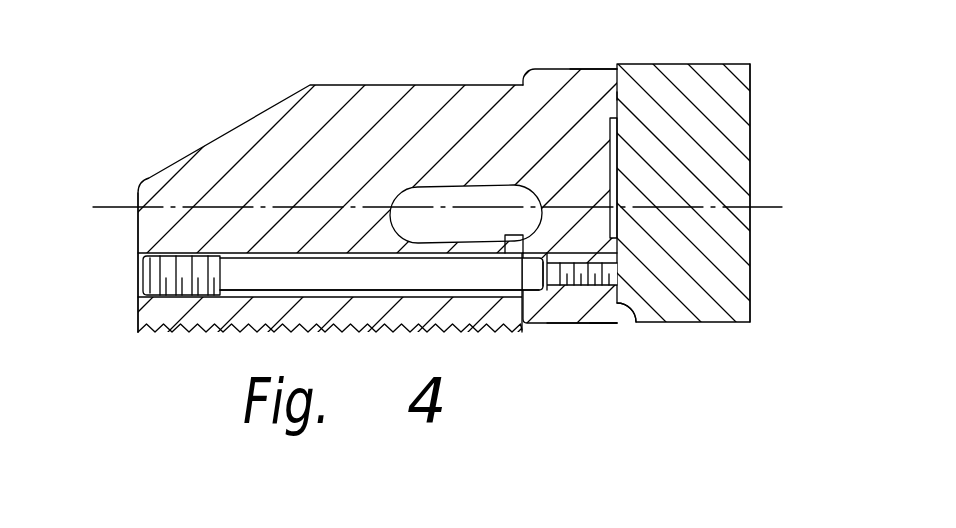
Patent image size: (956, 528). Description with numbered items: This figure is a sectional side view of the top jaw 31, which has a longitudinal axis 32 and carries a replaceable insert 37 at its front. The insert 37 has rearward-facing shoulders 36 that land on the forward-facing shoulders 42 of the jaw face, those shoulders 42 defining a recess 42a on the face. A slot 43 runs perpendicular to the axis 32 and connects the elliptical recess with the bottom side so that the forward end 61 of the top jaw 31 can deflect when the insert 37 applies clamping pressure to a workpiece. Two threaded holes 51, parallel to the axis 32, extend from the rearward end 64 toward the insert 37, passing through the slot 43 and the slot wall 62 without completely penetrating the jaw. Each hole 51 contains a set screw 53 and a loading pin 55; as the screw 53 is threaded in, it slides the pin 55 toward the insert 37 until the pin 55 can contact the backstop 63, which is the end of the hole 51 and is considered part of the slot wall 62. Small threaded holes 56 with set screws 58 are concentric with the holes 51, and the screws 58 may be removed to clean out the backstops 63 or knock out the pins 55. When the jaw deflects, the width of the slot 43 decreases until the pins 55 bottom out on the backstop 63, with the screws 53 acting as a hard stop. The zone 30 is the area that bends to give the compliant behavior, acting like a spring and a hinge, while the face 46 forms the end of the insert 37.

The zone 30 is at (563, 56).
The top jaw 31 is at (228, 113).
The longitudinal axis 32 is at (770, 207).
The rearward-facing shoulders 36 is at (583, 53).
The replaceable insert 37 is at (732, 122).
The forward-facing shoulders 42 is at (624, 99).
The recess 42a is at (617, 218).
The slot 43 is at (522, 330).
The end face 46 is at (752, 81).
The threaded holes 51 is at (346, 290).
The set screw 53 is at (150, 267).
The loading pin 55 is at (252, 284).
The small threaded holes 56 is at (556, 266).
The set screws 58 is at (584, 312).
The forward end 61 is at (607, 320).
The slot wall 62 is at (513, 238).
The backstop 63 is at (548, 272).
The rearward end 64 is at (138, 231).